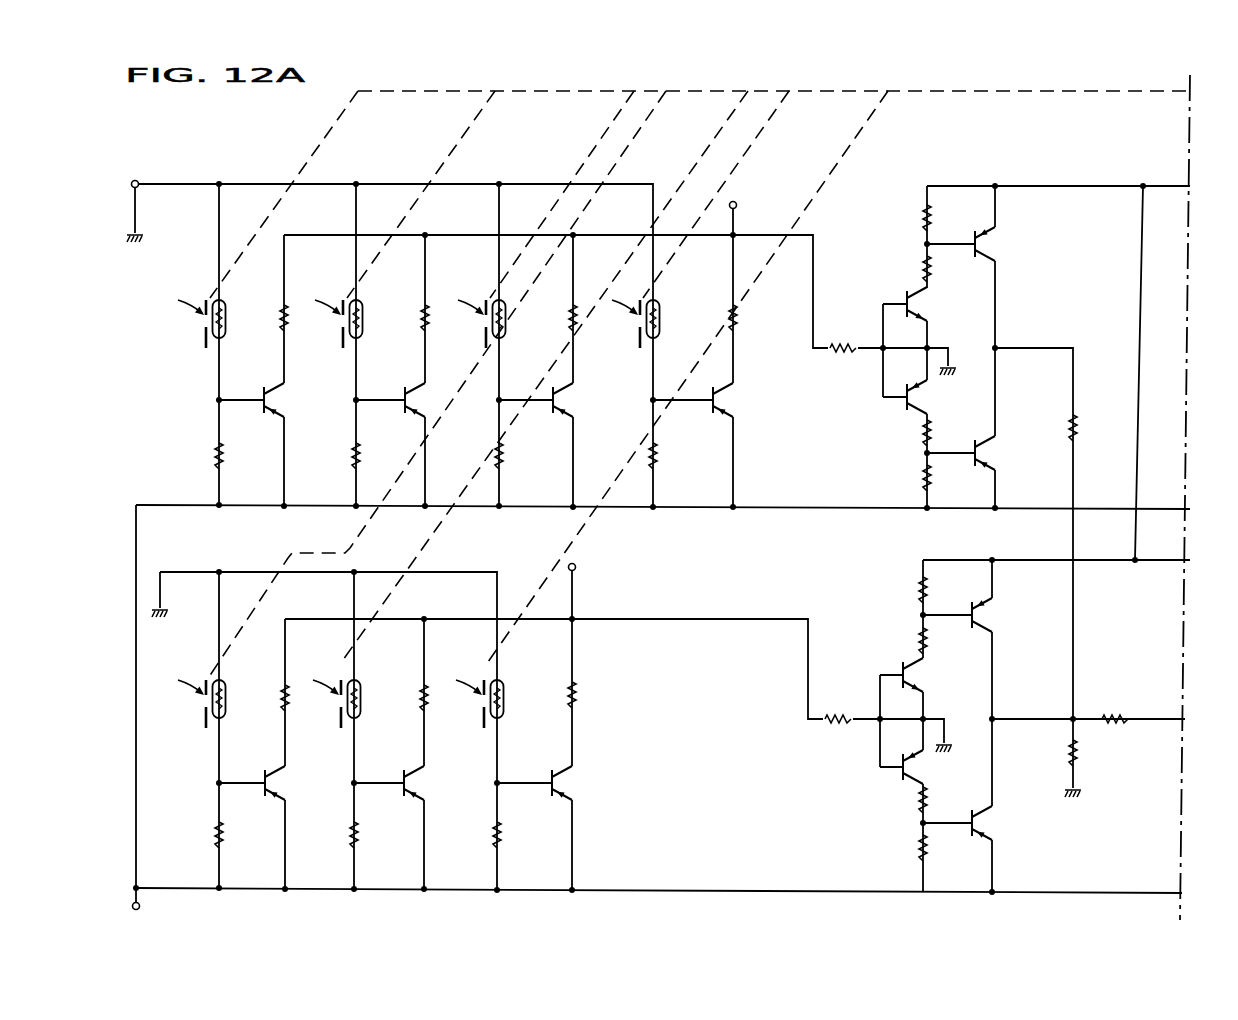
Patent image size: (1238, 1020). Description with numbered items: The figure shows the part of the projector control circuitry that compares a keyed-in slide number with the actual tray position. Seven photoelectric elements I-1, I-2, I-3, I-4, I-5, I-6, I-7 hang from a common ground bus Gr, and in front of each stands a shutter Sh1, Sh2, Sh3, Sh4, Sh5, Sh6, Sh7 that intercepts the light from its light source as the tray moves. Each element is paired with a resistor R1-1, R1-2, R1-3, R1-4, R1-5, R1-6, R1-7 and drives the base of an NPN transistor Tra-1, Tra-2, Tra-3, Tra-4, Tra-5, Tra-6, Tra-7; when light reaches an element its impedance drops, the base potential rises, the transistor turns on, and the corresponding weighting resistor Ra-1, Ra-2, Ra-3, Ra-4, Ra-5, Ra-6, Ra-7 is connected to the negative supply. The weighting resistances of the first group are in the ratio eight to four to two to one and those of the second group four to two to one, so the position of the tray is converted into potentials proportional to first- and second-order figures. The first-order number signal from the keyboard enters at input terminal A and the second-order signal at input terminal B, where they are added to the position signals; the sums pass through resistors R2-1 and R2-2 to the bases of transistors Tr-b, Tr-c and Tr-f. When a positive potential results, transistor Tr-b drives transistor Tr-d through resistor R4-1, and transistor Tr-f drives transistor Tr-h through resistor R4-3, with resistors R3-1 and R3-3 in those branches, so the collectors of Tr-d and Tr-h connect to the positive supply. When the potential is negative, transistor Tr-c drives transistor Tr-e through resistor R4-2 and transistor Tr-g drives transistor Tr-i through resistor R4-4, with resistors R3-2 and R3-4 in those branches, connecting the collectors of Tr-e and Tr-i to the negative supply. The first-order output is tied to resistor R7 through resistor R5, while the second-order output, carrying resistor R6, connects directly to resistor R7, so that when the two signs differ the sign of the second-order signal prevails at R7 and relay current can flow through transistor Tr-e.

The ground terminal Gr is at (131, 171).
The input terminal A is at (743, 206).
The input terminal B is at (581, 568).
The photoelectric element I-1 is at (235, 319).
The photoelectric element I-2 is at (372, 319).
The photoelectric element I-3 is at (515, 319).
The photoelectric element I-4 is at (669, 319).
The photoelectric element I-5 is at (235, 699).
The photoelectric element I-6 is at (402, 699).
The photoelectric element I-7 is at (513, 699).
The shutter Sh1 is at (205, 323).
The shutter Sh2 is at (342, 340).
The shutter Sh3 is at (485, 340).
The shutter Sh4 is at (639, 340).
The shutter Sh5 is at (205, 703).
The shutter Sh6 is at (340, 720).
The shutter Sh7 is at (483, 720).
The resistor Ra-1 is at (356, 315).
The resistor Ra-2 is at (498, 315).
The resistor Ra-3 is at (650, 315).
The resistor Ra-4 is at (758, 309).
The resistor Ra-5 is at (348, 695).
The resistor Ra-6 is at (490, 695).
The resistor Ra-7 is at (598, 693).
The resistor R1-1 is at (246, 456).
The resistor R1-2 is at (383, 456).
The resistor R1-3 is at (526, 456).
The resistor R1-4 is at (680, 456).
The resistor R1-5 is at (246, 835).
The resistor R1-6 is at (381, 835).
The resistor R1-7 is at (524, 835).
The NPN transistor Tra-1 is at (288, 402).
The NPN transistor Tra-2 is at (429, 402).
The NPN transistor Tra-3 is at (577, 402).
The NPN transistor Tra-4 is at (737, 402).
The NPN transistor Tra-5 is at (289, 785).
The NPN transistor Tra-6 is at (428, 785).
The NPN transistor Tra-7 is at (576, 785).
The resistor R2-1 is at (841, 361).
The resistor R2-2 is at (837, 731).
The resistor R3-1 is at (901, 218).
The resistor R3-2 is at (896, 478).
The resistor R3-3 is at (894, 590).
The resistor R3-4 is at (892, 848).
The resistor R4-1 is at (900, 267).
The resistor R4-2 is at (898, 431).
The resistor R4-3 is at (894, 639).
The resistor R4-4 is at (893, 800).
The resistor R5 is at (1091, 425).
The resistor R6 is at (1089, 751).
The resistor R7 is at (1115, 714).
The NPN transistor Tr-b is at (930, 306).
The PNP transistor Tr-c is at (930, 399).
The PNP transistor Tr-d is at (998, 246).
The NPN transistor Tr-e is at (998, 455).
The NPN transistor Tr-f is at (926, 677).
The PNP transistor Tr-g is at (926, 769).
The PNP transistor Tr-h is at (1008, 615).
The NPN transistor Tr-i is at (1003, 824).